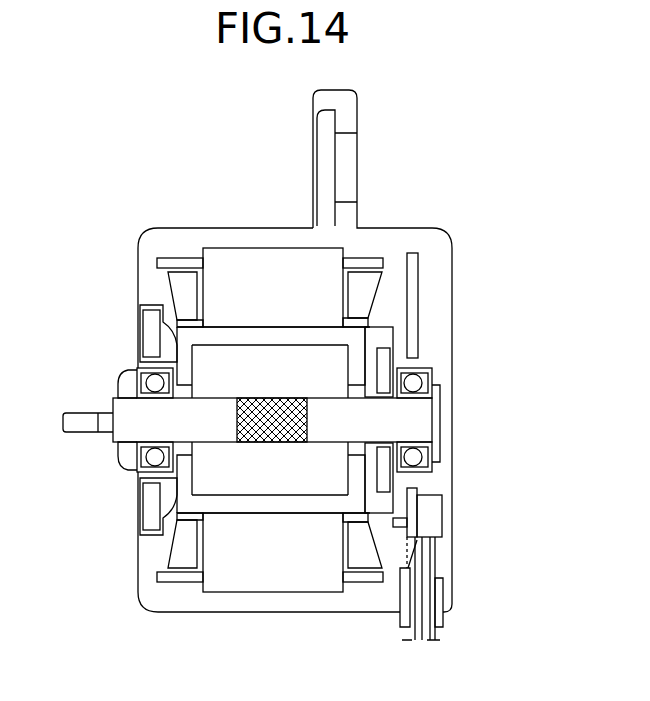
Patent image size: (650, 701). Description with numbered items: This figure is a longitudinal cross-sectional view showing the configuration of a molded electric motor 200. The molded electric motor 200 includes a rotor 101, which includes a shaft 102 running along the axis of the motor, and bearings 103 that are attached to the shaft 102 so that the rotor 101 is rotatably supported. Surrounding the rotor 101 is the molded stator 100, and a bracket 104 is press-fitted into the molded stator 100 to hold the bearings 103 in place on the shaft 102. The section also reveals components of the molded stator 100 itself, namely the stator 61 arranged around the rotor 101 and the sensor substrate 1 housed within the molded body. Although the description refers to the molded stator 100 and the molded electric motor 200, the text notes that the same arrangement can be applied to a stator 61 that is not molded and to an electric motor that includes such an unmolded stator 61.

The molded electric motor 200 is at (488, 222).
The molded stator 100 is at (215, 228).
The stator 61 is at (286, 562).
The rotor 101 is at (205, 487).
The shaft 102 is at (76, 425).
The bearings 103 is at (155, 383).
The bracket 104 is at (125, 378).
The sensor substrate 1 is at (413, 290).